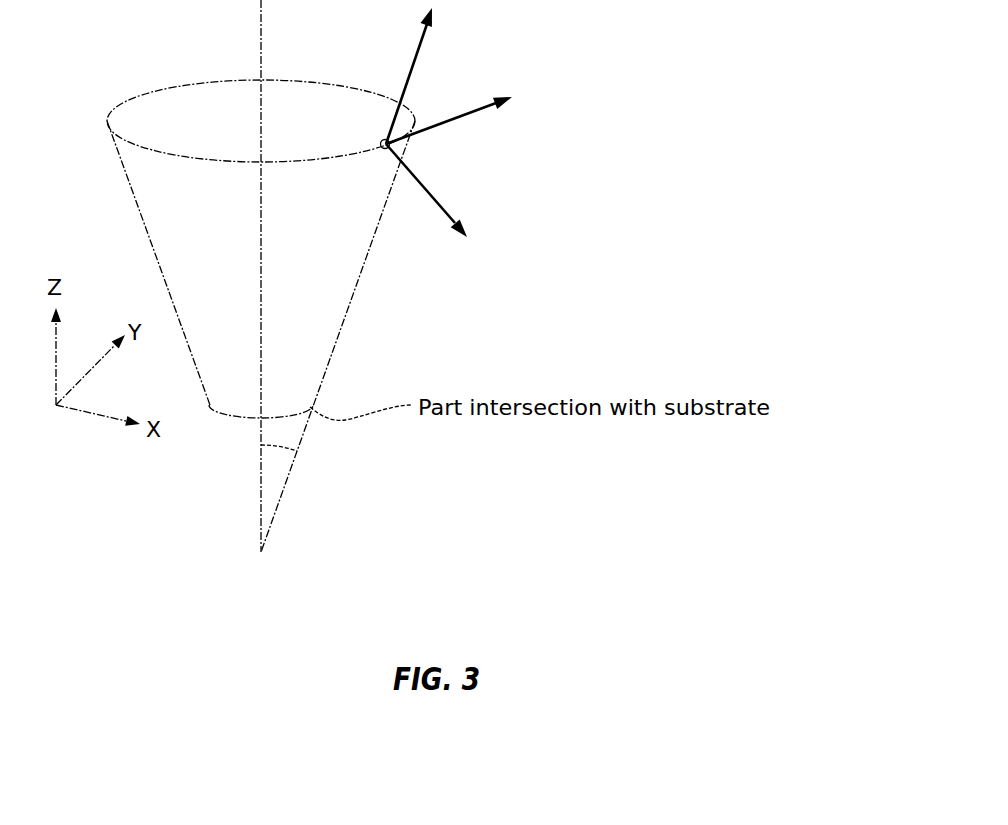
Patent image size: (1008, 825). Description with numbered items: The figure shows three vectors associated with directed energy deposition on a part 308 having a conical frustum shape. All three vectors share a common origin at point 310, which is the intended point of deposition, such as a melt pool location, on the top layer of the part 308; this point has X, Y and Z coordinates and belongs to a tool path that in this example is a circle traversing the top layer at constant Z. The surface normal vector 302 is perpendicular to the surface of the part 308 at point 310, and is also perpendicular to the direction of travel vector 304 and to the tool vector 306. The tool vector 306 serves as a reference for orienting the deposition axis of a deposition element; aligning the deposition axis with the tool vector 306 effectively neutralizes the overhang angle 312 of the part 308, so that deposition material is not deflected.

The surface normal vector 302 is at (440, 200).
The direction of travel vector 304 is at (440, 132).
The tool vector 306 is at (413, 72).
The part 308 is at (190, 107).
The point 310 is at (383, 141).
The angle 312 is at (282, 448).